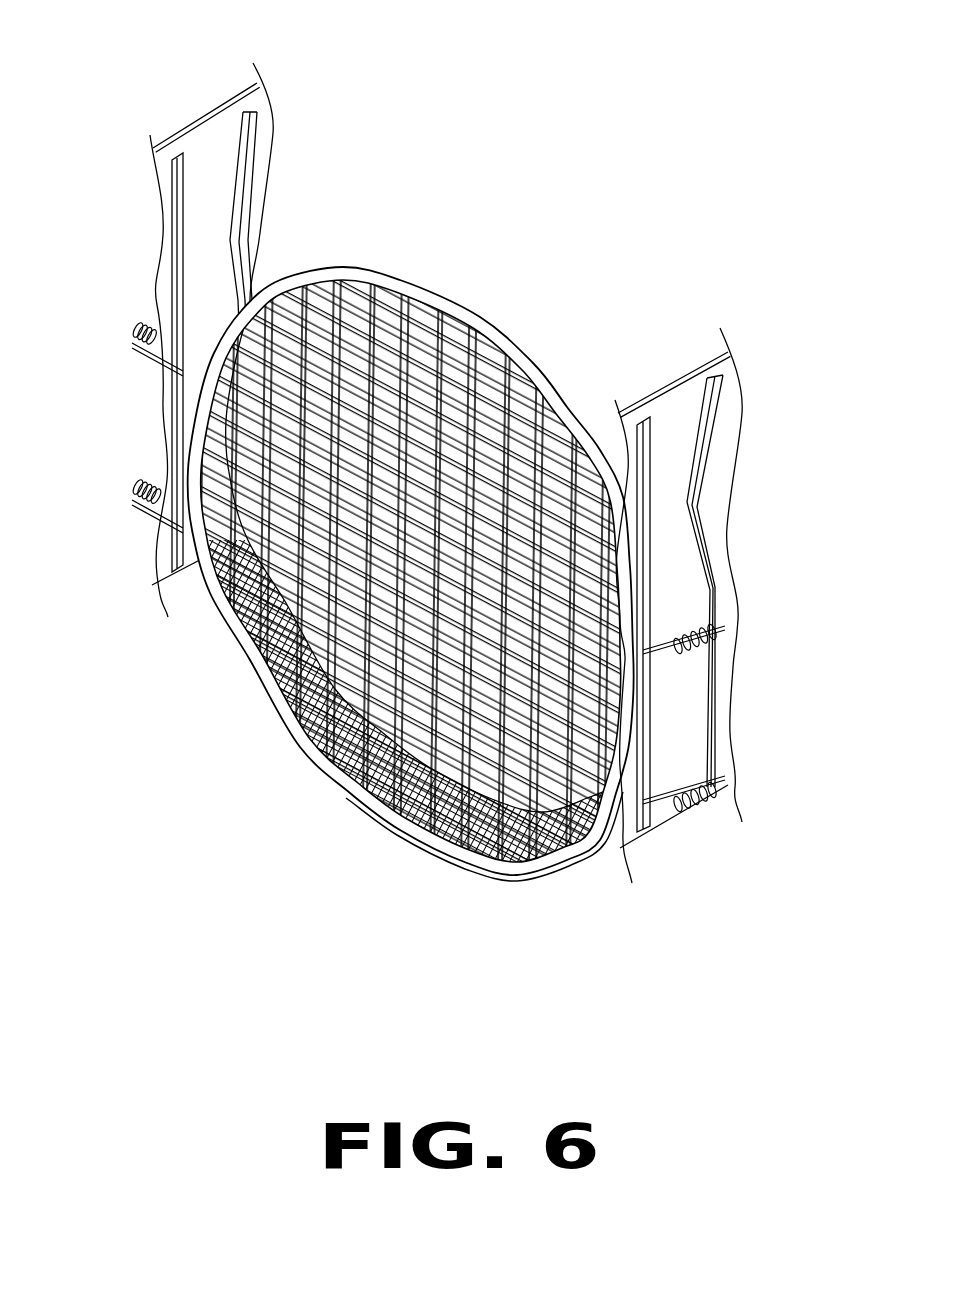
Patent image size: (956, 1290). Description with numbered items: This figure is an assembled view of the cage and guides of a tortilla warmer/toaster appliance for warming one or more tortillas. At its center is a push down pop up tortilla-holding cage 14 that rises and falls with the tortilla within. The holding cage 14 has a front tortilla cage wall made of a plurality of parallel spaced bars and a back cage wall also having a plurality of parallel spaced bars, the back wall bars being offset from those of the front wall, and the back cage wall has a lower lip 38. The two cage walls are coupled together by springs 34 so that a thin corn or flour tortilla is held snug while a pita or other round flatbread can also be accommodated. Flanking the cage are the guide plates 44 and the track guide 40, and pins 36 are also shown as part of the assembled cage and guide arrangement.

The tortilla-holding cage 14 is at (490, 323).
The springs 34 is at (677, 643).
The pins 36 is at (660, 800).
The lower lip 38 is at (308, 745).
The track guide 40 is at (248, 157).
The guide plates 44 is at (163, 137).